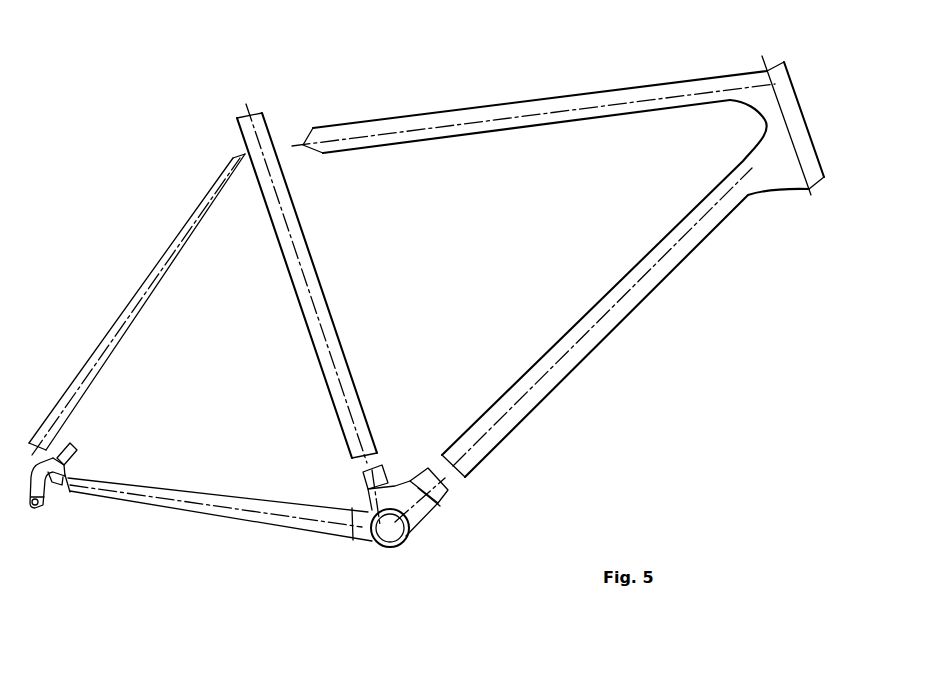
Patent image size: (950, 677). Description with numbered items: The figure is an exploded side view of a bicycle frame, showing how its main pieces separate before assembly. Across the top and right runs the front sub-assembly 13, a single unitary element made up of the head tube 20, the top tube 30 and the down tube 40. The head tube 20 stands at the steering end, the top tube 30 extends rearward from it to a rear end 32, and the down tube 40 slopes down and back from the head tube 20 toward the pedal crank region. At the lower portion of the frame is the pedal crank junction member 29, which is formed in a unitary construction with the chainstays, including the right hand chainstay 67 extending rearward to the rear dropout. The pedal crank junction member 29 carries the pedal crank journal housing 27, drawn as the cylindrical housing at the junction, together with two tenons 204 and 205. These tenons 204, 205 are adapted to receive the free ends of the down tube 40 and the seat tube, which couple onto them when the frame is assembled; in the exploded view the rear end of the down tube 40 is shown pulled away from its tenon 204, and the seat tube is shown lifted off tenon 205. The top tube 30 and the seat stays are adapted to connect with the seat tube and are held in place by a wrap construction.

The front sub-assembly 13 is at (452, 308).
The head tube 20 is at (818, 125).
The top tube 30 is at (533, 109).
The rear end 32 is at (340, 116).
The down tube 40 is at (625, 288).
The pedal crank journal housing 27 is at (415, 553).
The pedal crank junction member 29 is at (445, 512).
The tenon 204 is at (469, 502).
The tenon 205 is at (405, 458).
The right hand chainstay 67 is at (218, 518).